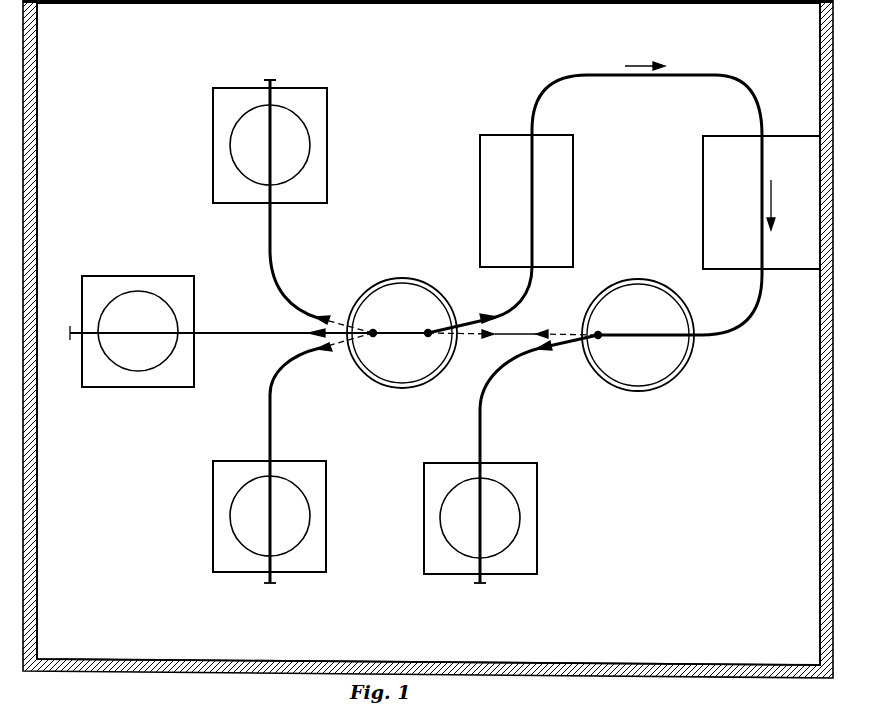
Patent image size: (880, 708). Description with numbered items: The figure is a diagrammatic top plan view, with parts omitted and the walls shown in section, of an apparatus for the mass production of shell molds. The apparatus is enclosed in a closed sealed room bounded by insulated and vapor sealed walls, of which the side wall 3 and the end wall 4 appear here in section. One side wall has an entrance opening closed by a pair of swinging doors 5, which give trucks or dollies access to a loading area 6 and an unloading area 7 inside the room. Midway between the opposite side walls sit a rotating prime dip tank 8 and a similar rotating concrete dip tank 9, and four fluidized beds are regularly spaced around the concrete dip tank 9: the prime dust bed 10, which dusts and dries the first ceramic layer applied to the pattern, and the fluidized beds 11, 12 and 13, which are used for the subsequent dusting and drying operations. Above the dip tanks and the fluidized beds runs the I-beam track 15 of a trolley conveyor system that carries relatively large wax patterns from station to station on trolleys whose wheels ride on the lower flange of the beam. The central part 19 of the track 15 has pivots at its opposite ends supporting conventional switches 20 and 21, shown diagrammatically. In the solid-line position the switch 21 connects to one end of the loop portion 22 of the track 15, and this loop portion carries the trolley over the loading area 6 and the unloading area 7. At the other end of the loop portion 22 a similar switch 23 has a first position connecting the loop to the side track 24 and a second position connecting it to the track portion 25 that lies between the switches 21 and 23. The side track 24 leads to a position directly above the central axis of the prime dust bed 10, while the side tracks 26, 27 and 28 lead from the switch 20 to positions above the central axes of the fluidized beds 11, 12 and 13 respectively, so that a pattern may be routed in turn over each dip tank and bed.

The side wall 3 is at (410, 3).
The end wall 4 is at (37, 588).
The swinging doors 5 is at (660, 3).
The loading area 6 is at (725, 136).
The unloading area 7 is at (492, 135).
The rotating prime dip tank 8 is at (667, 378).
The rotating concrete dip tank 9 is at (368, 378).
The prime dust bed 10 is at (540, 518).
The fluidized bed 11 is at (213, 530).
The fluidized bed 12 is at (122, 276).
The fluidized bed 13 is at (297, 88).
The I-beam track 15 is at (566, 80).
The central part of the track 19 is at (390, 330).
The switch 20 is at (331, 326).
The switch 21 is at (470, 318).
The loop portion 22 is at (725, 78).
The switch 23 is at (558, 350).
The side track 24 is at (483, 438).
The track portion 25 is at (517, 333).
The side track 26 is at (287, 356).
The side track 27 is at (228, 330).
The side track 28 is at (270, 250).